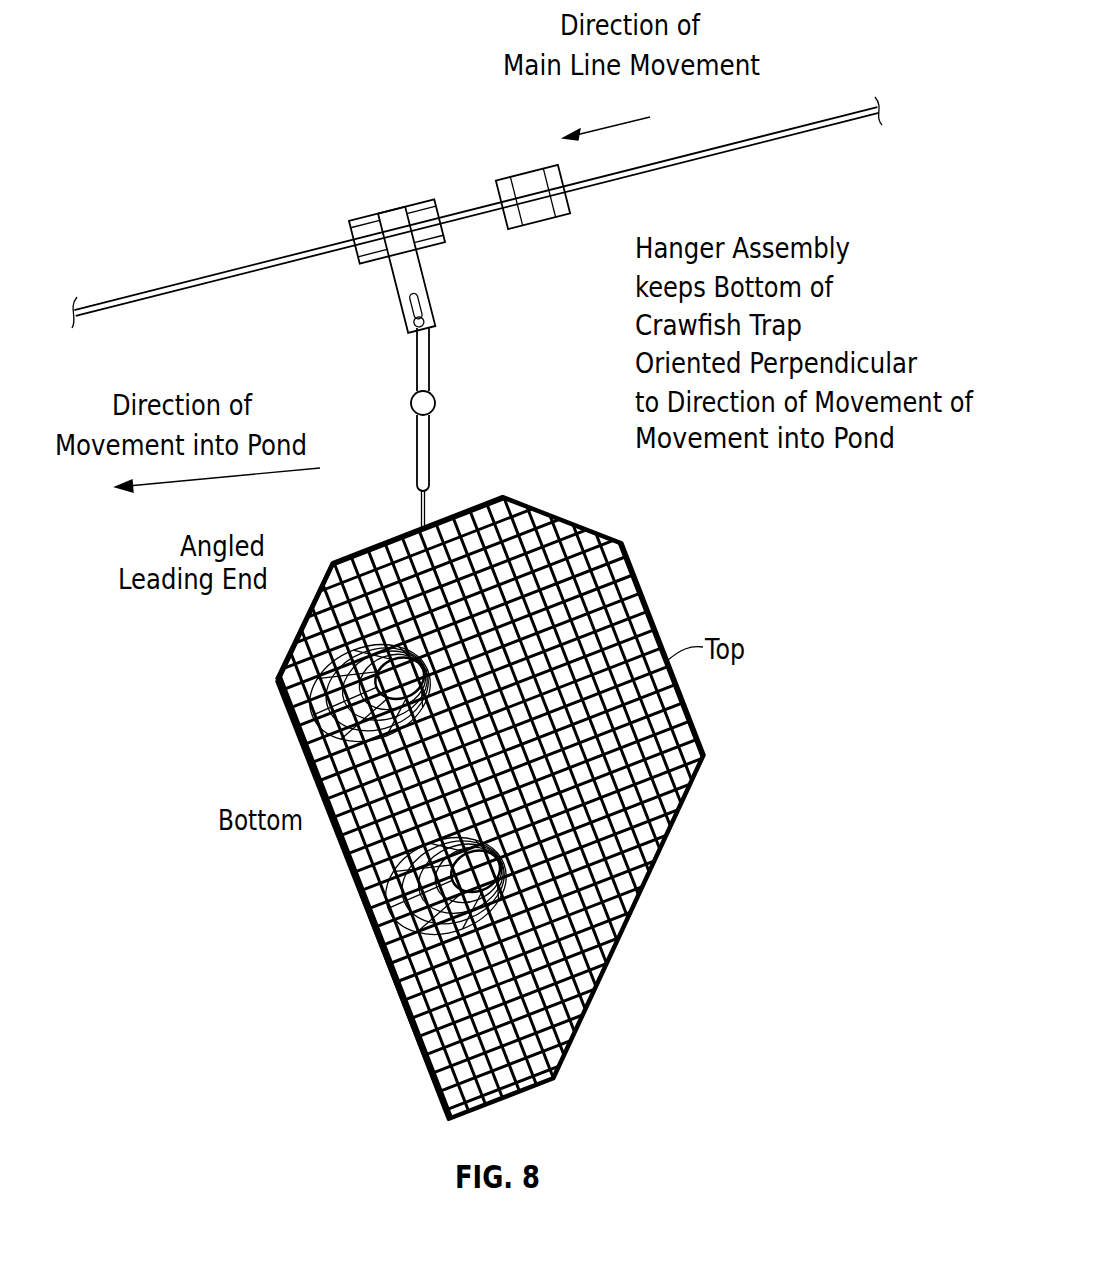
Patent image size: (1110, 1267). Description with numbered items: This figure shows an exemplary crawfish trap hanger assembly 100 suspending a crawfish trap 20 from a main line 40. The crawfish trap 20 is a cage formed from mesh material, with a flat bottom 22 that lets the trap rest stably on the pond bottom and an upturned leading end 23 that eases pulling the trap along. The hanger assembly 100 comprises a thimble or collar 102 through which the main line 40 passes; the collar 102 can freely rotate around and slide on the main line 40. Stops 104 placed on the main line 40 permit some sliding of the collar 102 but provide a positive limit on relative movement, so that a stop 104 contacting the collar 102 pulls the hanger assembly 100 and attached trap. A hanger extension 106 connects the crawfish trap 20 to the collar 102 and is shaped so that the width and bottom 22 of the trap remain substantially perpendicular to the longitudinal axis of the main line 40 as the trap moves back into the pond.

The crawfish trap 20 is at (527, 787).
The bottom 22 is at (341, 838).
The leading end 23 is at (306, 618).
The main line 40 is at (822, 128).
The hanger assembly 100 is at (407, 337).
The collar 102 is at (392, 210).
The stops 104 is at (525, 172).
The hanger extension 106 is at (427, 253).